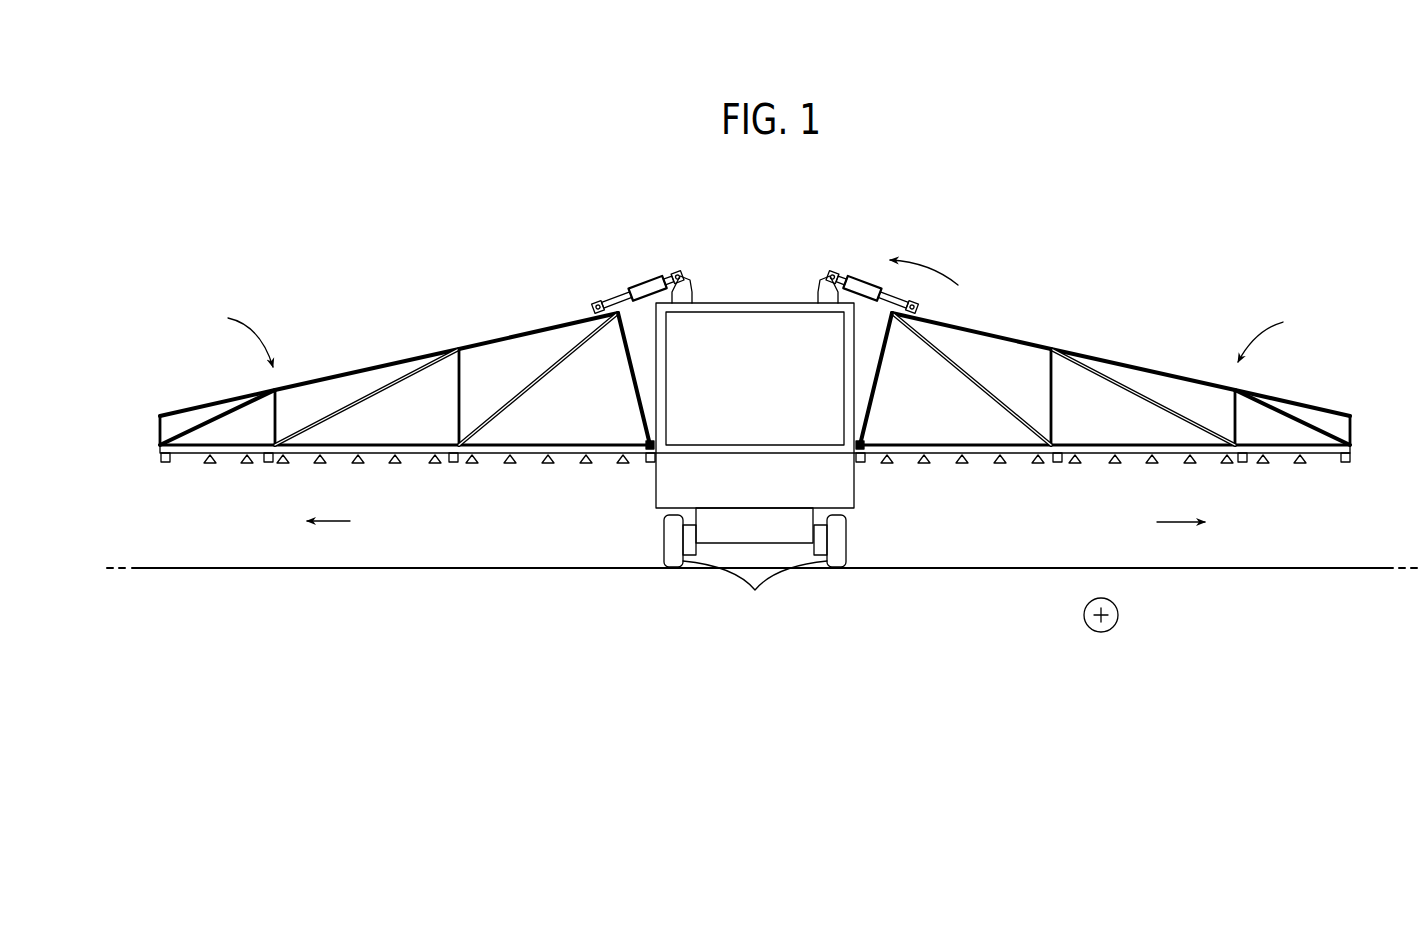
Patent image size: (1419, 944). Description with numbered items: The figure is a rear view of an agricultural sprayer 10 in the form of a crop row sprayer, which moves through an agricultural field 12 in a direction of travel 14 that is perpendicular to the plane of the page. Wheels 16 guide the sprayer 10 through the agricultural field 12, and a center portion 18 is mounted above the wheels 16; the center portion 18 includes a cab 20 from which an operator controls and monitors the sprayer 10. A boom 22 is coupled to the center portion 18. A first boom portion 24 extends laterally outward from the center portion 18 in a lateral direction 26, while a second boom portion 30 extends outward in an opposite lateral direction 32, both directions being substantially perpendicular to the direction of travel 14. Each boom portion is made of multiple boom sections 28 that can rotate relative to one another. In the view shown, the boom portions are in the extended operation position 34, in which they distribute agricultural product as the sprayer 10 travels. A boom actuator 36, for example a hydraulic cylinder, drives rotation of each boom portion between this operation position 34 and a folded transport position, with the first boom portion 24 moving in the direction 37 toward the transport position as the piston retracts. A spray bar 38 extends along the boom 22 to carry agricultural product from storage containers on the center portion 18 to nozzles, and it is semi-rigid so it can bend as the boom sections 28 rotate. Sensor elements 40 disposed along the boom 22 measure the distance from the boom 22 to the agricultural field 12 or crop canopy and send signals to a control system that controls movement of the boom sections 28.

The agricultural sprayer 10 is at (846, 349).
The agricultural field 12 is at (1330, 570).
The direction of travel 14 is at (1088, 628).
The wheels 16 is at (755, 565).
The center portion 18 is at (712, 303).
The cab 20 is at (762, 312).
The boom 22 is at (755, 331).
The first boom portion 24 is at (1275, 330).
The lateral direction 26 is at (1175, 524).
The boom sections 28 is at (217, 400).
The second boom portion 30 is at (233, 333).
The lateral direction 32 is at (337, 524).
The operation position 34 is at (755, 296).
The boom actuator 36 is at (648, 280).
The direction 37 is at (933, 268).
The spray bar 38 is at (600, 445).
The sensor elements 40 is at (165, 464).